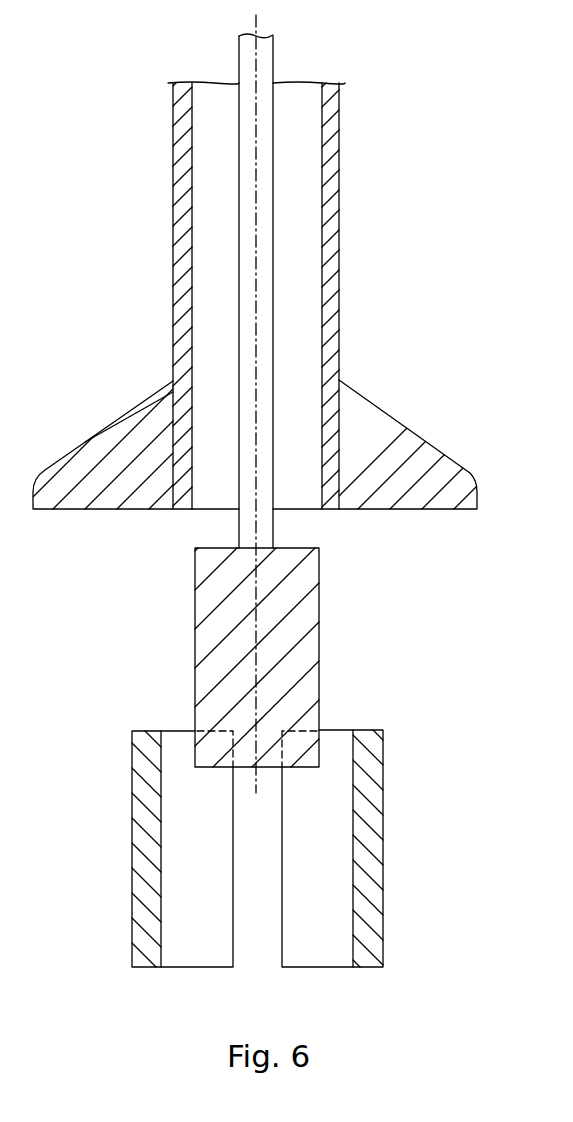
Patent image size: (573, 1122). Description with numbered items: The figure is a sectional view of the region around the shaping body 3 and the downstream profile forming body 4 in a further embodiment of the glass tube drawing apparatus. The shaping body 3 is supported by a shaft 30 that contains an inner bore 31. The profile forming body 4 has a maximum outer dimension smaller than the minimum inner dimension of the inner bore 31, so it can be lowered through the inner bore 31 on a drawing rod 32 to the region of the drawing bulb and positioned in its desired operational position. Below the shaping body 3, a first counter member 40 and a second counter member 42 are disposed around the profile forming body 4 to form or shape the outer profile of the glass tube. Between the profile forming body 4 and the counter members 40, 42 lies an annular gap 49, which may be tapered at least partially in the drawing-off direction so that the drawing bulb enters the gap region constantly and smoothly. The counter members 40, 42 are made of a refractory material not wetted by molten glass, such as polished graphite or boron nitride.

The shaping body 3 is at (427, 453).
The profile forming body 4 is at (310, 570).
The shaft of shaping body 30 is at (330, 127).
The inner bore 31 is at (300, 200).
The drawing rod 32 is at (266, 53).
The first counter member 40 is at (135, 820).
The second counter member 42 is at (377, 823).
The annular gap 49 is at (337, 738).